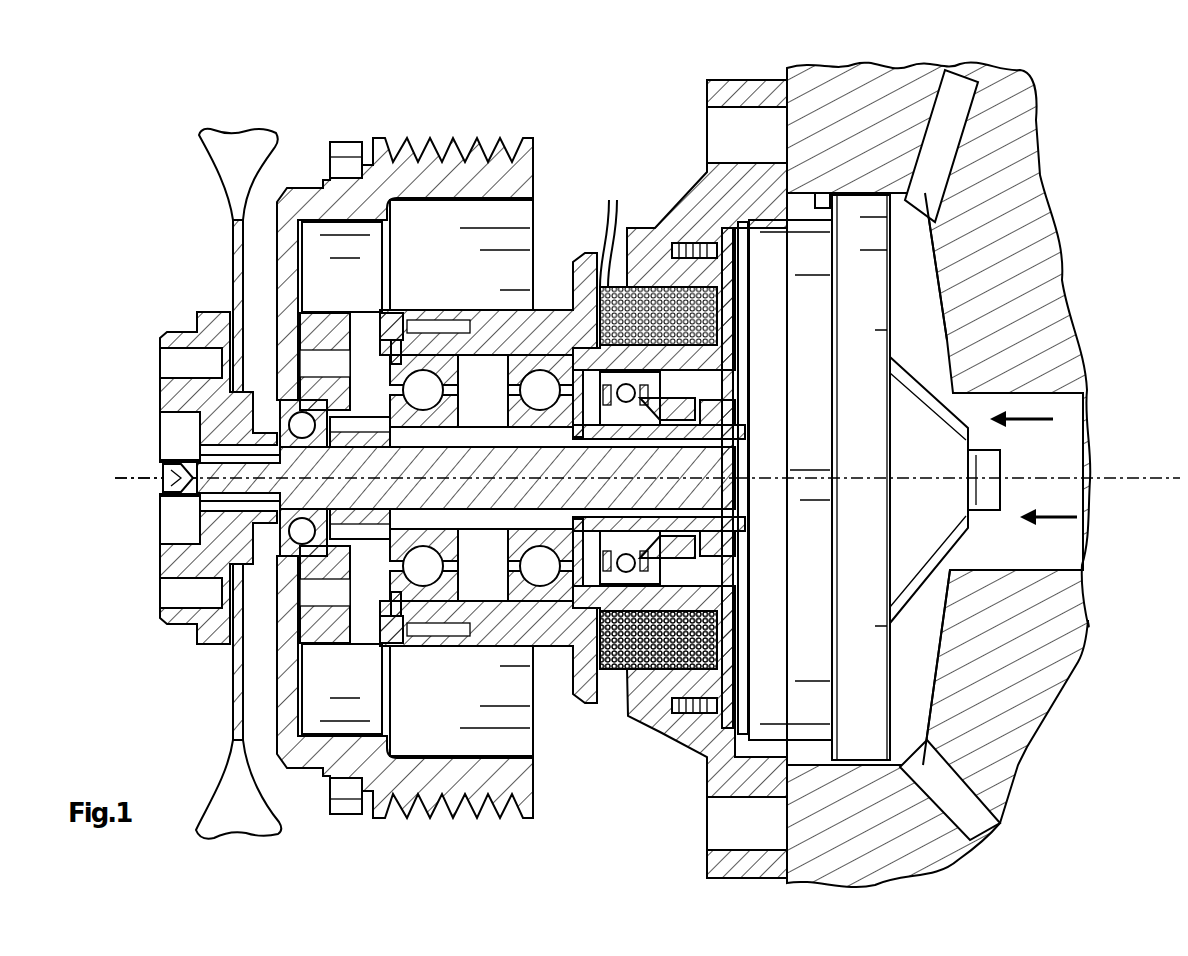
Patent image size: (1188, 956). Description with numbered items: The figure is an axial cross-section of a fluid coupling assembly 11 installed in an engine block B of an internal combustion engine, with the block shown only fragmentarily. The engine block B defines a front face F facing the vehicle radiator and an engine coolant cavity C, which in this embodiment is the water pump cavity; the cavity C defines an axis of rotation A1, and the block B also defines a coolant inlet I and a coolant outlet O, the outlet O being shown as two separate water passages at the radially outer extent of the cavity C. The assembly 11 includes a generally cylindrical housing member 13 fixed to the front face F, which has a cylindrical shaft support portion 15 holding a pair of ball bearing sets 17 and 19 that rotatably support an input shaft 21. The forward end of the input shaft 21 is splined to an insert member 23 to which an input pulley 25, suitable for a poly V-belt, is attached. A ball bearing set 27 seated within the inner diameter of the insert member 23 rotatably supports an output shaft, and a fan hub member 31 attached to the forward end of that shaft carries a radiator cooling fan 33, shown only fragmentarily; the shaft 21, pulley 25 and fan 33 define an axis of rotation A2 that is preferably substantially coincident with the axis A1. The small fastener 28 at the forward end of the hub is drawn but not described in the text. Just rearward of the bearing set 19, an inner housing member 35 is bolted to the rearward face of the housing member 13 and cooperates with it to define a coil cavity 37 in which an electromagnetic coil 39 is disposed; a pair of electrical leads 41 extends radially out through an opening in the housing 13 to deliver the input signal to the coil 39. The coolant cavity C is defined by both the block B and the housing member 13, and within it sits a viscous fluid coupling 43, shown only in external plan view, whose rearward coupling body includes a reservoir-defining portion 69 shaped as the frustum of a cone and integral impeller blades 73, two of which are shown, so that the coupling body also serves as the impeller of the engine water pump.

The fluid coupling assembly 11 is at (588, 116).
The housing member 13 is at (707, 80).
The shaft support portion 15 is at (503, 333).
The ball bearing set 17 is at (440, 412).
The ball bearing set 19 is at (557, 410).
The input shaft 21 is at (485, 432).
The insert member 23 is at (318, 332).
The input pulley 25 is at (442, 836).
The ball bearing set 27 is at (318, 443).
The bolt 28 is at (186, 488).
The fan hub member 31 is at (168, 397).
The radiator cooling fan 33 is at (244, 262).
The inner housing member 35 is at (665, 592).
The coil cavity 37 is at (637, 657).
The electromagnetic coil 39 is at (656, 296).
The electrical leads 41 is at (597, 229).
The viscous fluid coupling 43 is at (822, 195).
The reservoir-defining portion 69 is at (942, 527).
The impeller blades 73 is at (913, 272).
The axis of rotation A1 is at (1178, 478).
The axis of rotation A2 is at (137, 478).
The engine block B is at (1005, 195).
The engine coolant cavity C is at (846, 766).
The front face F is at (787, 72).
The coolant inlet I is at (1057, 450).
The coolant outlet O is at (973, 110).